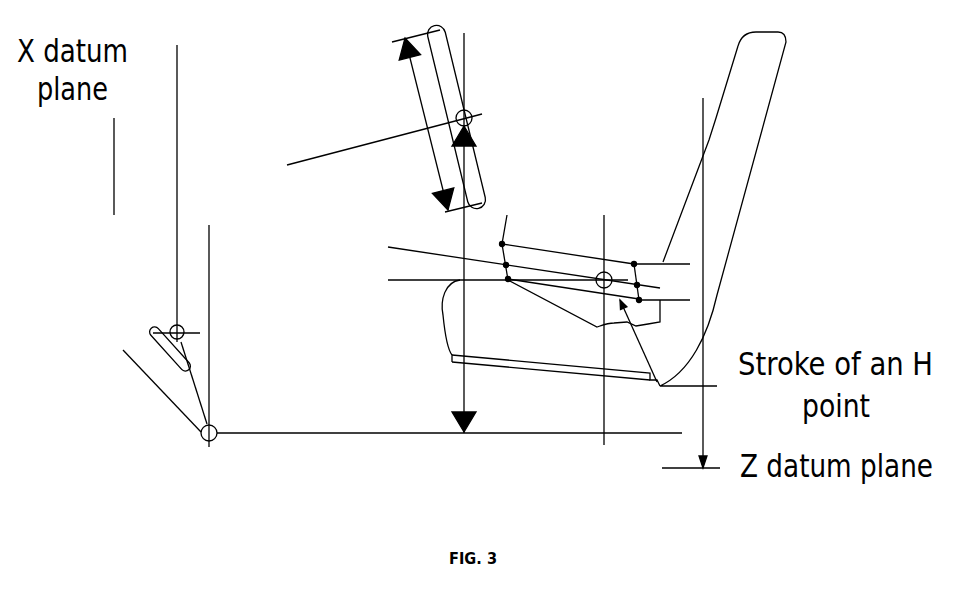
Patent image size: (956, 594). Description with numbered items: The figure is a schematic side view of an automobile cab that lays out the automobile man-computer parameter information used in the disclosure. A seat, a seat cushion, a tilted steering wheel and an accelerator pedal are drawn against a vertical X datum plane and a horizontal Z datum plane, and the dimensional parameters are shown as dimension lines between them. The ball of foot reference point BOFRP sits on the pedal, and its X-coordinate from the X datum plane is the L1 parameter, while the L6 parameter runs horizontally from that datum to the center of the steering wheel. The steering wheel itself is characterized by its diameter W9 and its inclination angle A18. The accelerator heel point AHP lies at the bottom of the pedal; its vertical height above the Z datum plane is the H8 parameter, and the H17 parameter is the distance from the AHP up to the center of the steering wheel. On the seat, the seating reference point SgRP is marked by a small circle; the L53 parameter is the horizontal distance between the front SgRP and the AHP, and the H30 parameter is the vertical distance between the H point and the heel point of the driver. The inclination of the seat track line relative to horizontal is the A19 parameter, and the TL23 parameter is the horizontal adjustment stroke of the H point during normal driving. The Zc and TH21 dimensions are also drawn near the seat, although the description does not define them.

The L1 parameter L1 is at (177, 139).
The L6 parameter L6 is at (464, 60).
The A18 parameter A18 is at (406, 102).
The W9 parameter W9 is at (437, 121).
The H17 parameter H17 is at (444, 271).
The TL23 parameter TL23 is at (604, 215).
The A19 parameter A19 is at (410, 228).
The seating reference point SgRP is at (597, 287).
The H30 parameter H30 is at (409, 281).
The L53 parameter L53 is at (604, 331).
The ball of foot reference point BOFRP is at (184, 324).
The accelerator heel point AHP is at (215, 424).
The height of seating reference point above Z datum plane Zc is at (705, 283).
The seat cushion thickness / H-point vertical travel TH21 is at (678, 243).
The H8 parameter H8 is at (667, 408).